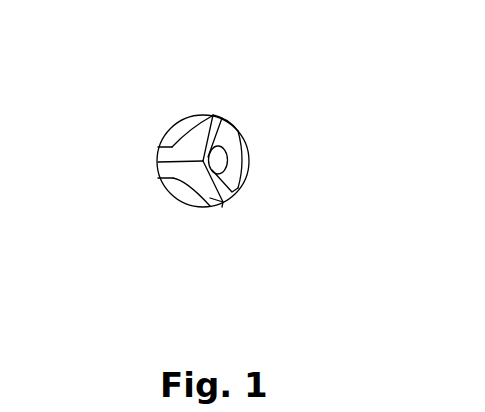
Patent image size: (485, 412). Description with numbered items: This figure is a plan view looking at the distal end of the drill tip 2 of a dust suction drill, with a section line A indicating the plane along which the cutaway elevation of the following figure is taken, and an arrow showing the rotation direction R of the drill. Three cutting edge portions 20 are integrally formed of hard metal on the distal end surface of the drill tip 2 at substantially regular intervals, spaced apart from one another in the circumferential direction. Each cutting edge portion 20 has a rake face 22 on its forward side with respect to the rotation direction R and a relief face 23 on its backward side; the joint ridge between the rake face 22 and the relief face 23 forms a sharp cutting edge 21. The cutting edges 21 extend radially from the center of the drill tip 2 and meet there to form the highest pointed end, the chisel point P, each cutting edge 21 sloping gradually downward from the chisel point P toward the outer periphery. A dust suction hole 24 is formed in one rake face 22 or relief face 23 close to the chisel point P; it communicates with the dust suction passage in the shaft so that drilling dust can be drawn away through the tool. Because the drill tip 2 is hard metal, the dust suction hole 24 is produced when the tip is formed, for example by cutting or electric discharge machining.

The drill tip 2 is at (362, 112).
The cutting edge portion 20 is at (220, 47).
The cutting edge 21 is at (167, 192).
The rake face 22 is at (215, 117).
The relief face 23 is at (232, 117).
The dust suction hole 24 is at (225, 158).
The chisel point P is at (194, 124).
The line A- A is at (205, 50).
The rotation direction R is at (280, 320).